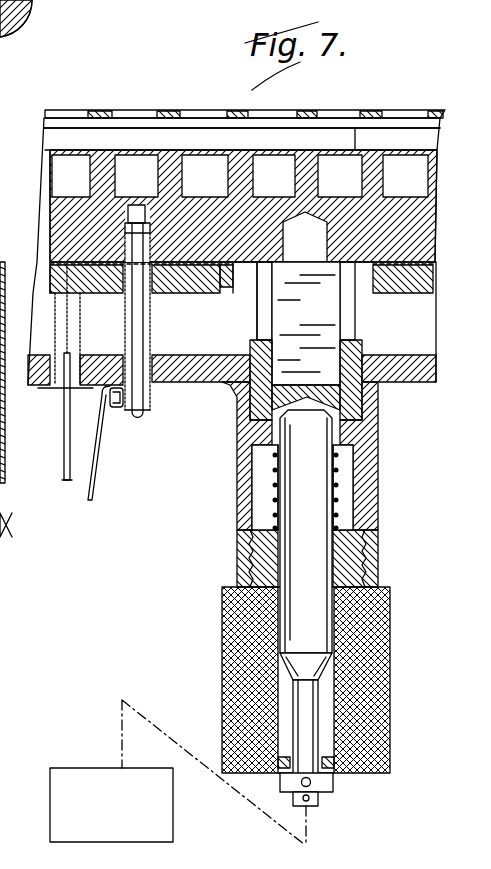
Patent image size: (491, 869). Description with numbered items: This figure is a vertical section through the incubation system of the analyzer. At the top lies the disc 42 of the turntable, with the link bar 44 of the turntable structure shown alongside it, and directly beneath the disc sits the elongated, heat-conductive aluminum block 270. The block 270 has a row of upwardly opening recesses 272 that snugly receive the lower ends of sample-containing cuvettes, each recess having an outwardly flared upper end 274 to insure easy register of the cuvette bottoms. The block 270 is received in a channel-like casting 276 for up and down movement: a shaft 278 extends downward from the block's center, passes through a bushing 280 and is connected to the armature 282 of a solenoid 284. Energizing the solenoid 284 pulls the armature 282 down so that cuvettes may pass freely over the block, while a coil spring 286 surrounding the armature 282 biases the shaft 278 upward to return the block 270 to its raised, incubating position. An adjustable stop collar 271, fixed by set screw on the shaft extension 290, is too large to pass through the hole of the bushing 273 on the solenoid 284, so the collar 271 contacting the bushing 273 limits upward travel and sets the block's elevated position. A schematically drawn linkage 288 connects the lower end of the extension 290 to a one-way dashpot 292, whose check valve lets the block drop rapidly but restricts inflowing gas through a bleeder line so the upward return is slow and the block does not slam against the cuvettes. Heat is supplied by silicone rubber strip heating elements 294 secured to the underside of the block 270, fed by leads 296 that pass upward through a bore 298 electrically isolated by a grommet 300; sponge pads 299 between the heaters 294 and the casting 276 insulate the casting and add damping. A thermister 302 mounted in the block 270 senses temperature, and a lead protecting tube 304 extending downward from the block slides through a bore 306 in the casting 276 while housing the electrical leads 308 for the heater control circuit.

The disc 42 is at (58, 112).
The chain link bar 44 is at (400, 113).
The heat-conductive block 270 is at (45, 220).
The recesses 272 is at (187, 153).
The outwardly flared upper ends 274 is at (90, 157).
The channel-like casting 276 is at (274, 484).
The shaft 278 is at (373, 392).
The bushing 280 is at (360, 425).
The armature 282 is at (317, 490).
The solenoid 284 is at (223, 612).
The coil spring 286 is at (273, 507).
The linkage 288 is at (178, 745).
The shaft extension 290 is at (309, 690).
The one-way dashpot 292 is at (62, 743).
The silicone rubber strip heating elements 294 is at (385, 290).
The leads 296 is at (62, 468).
The bore 298 is at (55, 357).
The sponge pads 299 is at (232, 356).
The grommet 300 is at (90, 355).
The thermister 302 is at (137, 205).
The lead protecting tube 304 is at (218, 292).
The bore 306 is at (207, 420).
The electrical leads 308 is at (93, 483).
The bushing 273 is at (333, 773).
The adjustable stop collar 271 is at (322, 792).